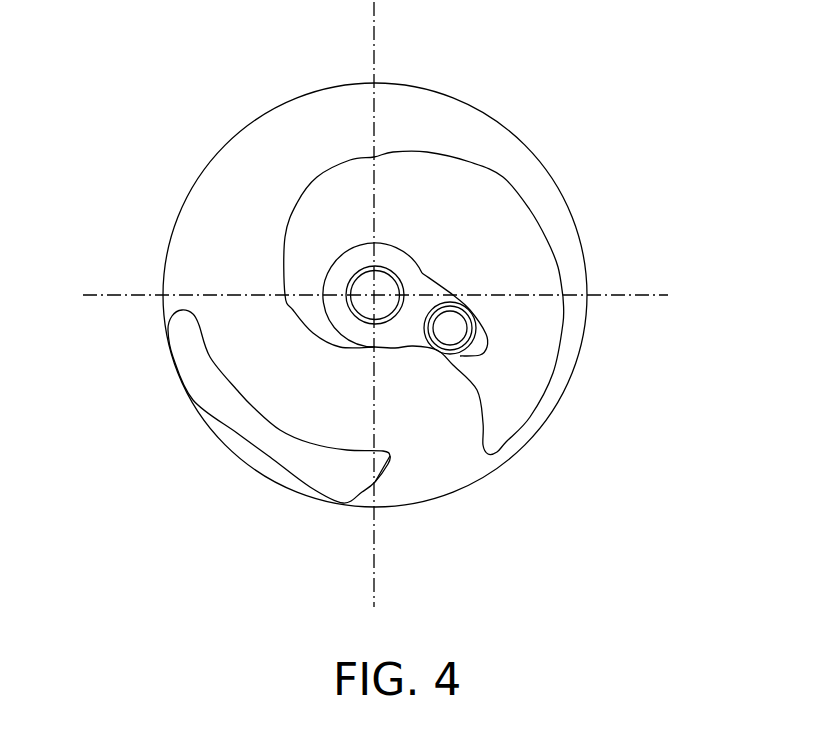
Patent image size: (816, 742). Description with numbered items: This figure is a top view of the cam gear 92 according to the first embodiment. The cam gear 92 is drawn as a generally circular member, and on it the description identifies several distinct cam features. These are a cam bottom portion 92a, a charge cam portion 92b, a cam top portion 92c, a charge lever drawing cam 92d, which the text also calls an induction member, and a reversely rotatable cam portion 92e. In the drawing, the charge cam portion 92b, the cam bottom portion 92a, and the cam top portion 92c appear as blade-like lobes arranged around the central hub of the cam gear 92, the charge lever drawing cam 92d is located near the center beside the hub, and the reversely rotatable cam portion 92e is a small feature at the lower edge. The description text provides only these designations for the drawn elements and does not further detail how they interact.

The cam gear 92 is at (187, 128).
The cam bottom portion 92a is at (410, 353).
The charge cam portion 92b is at (347, 167).
The cam top portion 92c is at (525, 422).
The charge lever drawing cam 92d is at (458, 297).
The reversely rotatable cam portion 92e is at (377, 482).